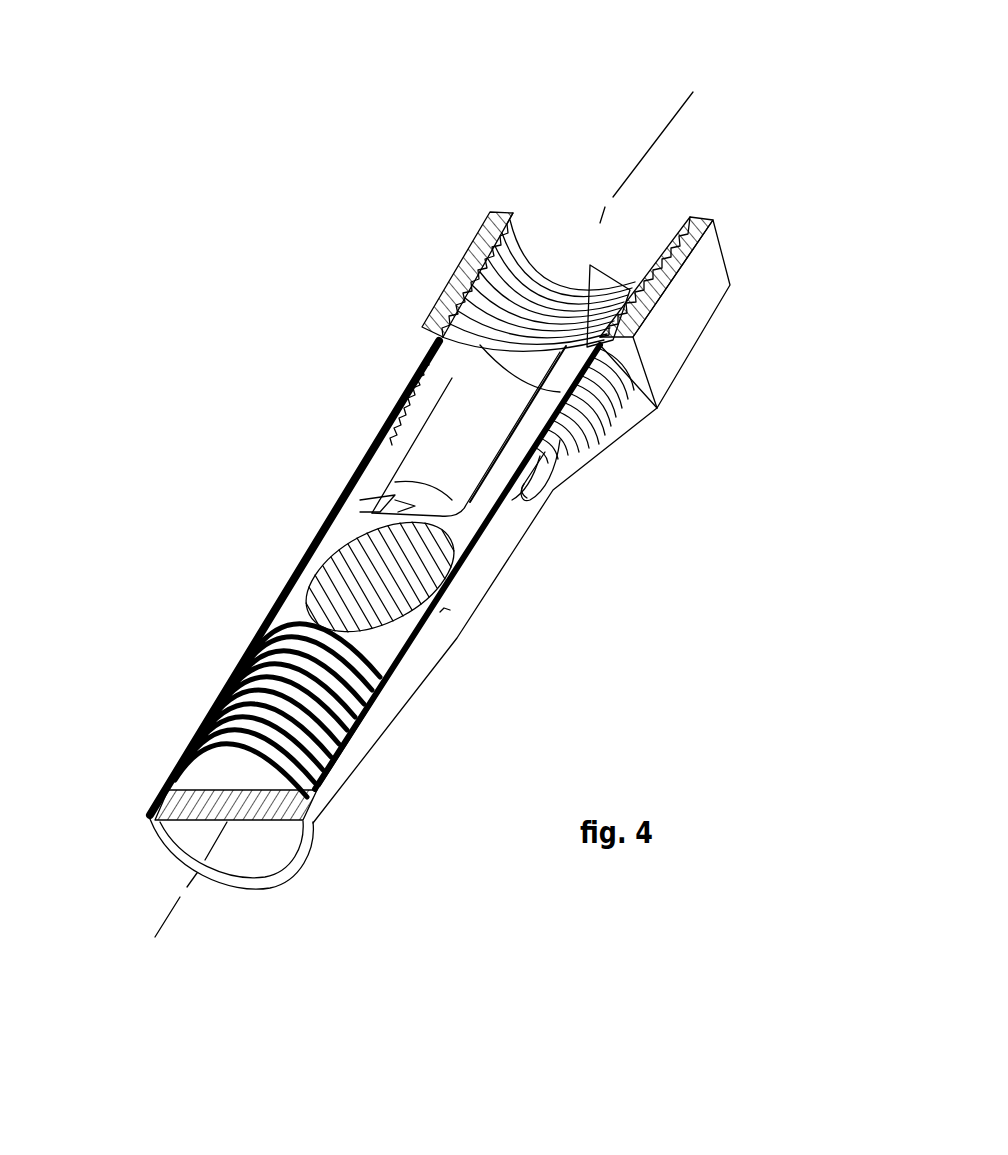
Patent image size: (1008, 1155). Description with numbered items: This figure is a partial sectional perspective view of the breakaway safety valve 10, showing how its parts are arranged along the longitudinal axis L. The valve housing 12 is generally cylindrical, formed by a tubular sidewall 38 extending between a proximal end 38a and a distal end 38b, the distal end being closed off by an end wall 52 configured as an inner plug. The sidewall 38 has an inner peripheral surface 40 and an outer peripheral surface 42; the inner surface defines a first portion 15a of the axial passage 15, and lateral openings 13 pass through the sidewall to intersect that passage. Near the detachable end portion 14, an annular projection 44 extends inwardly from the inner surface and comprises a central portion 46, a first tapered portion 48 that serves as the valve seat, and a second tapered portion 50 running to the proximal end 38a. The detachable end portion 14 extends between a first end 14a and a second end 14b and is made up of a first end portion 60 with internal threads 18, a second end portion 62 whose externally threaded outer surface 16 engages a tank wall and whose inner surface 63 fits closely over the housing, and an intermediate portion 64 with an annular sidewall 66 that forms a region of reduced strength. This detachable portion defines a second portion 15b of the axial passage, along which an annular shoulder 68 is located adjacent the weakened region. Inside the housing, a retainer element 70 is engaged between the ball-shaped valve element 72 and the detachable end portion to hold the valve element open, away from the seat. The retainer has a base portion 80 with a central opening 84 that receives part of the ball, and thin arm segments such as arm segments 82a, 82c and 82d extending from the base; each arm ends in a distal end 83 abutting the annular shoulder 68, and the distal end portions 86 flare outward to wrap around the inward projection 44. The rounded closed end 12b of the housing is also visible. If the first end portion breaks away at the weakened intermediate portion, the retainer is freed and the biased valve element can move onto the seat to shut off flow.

The safety valve 10 is at (167, 227).
The valve housing 12 is at (200, 657).
The rounded end of housing 12b is at (318, 857).
The lateral openings 13 is at (413, 493).
The detachable end portion 14 is at (410, 268).
The first end 14a is at (749, 195).
The second end 14b is at (557, 478).
The axial passage 15 is at (735, 164).
The first portion of the axial passage 15a is at (470, 464).
The second portion of the axial passage 15b is at (552, 388).
The externally threaded outer surface 16 is at (600, 427).
The internal threads 18 is at (530, 290).
The tubular sidewall 38 is at (297, 593).
The proximal end 38a is at (389, 267).
The distal end 38b is at (428, 800).
The inner peripheral surface 40 is at (345, 527).
The outer peripheral surface 42 is at (447, 620).
The annular projection 44 is at (648, 380).
The central portion 46 is at (413, 383).
The first tapered portion 48 is at (437, 405).
The second tapered portion 50 is at (427, 363).
The end wall 52 is at (268, 858).
The first end portion 60 is at (705, 292).
The second end portion 62 is at (685, 498).
The inner surface 63 is at (383, 423).
The intermediate portion 64 is at (749, 398).
The annular sidewall 66 is at (598, 347).
The annular shoulder 68 is at (432, 156).
The retainer element 70 is at (400, 443).
The valve element 72 is at (397, 640).
The base portion 80 is at (462, 555).
The arm segment 82a is at (490, 497).
The arm segment 82c is at (377, 493).
The arm segment 82d is at (537, 503).
The distal end 83 is at (605, 338).
The central opening 84 is at (417, 507).
The distal end portions 86 is at (556, 285).
The longitudinal axis L is at (700, 90).